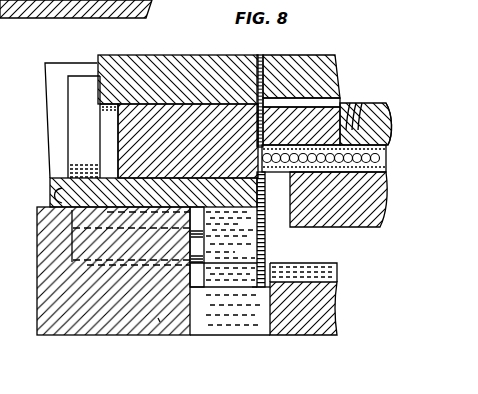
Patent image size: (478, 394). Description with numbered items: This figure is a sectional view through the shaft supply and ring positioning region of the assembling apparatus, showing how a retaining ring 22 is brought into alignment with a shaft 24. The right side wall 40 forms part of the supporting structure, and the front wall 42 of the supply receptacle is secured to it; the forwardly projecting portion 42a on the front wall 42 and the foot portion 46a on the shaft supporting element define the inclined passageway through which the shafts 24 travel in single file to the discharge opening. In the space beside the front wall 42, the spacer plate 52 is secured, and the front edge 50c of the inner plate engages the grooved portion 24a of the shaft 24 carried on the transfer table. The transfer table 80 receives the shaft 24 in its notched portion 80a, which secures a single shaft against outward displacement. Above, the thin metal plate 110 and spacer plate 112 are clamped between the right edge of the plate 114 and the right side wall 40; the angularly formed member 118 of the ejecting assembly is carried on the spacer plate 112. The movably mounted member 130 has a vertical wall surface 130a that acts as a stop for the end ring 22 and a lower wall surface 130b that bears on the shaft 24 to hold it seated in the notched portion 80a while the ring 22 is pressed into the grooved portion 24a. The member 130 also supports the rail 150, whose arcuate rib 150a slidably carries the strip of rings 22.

The front wall 42 is at (72, 42).
The angularly formed member 118 is at (80, 122).
The plate 114 is at (166, 64).
The member 130 is at (122, 137).
The vertical wall surface 130a is at (258, 122).
The thin metal plate 110 is at (250, 40).
The spacer plate 112 is at (268, 60).
The right side wall 40 is at (313, 55).
The rail 150 is at (332, 258).
The arcuate rib 150a is at (389, 130).
The retaining ring 22 is at (302, 240).
The shaft 24 is at (62, 181).
The notched portion 80a is at (52, 200).
The transfer table 80 is at (65, 335).
The foot portion 46a is at (222, 318).
The lower wall surface 130b is at (248, 210).
The spacer plate 52 is at (266, 232).
The front edge 50c is at (247, 268).
The grooved portion 24a is at (330, 291).
The forwardly projecting portion 42a is at (158, 318).